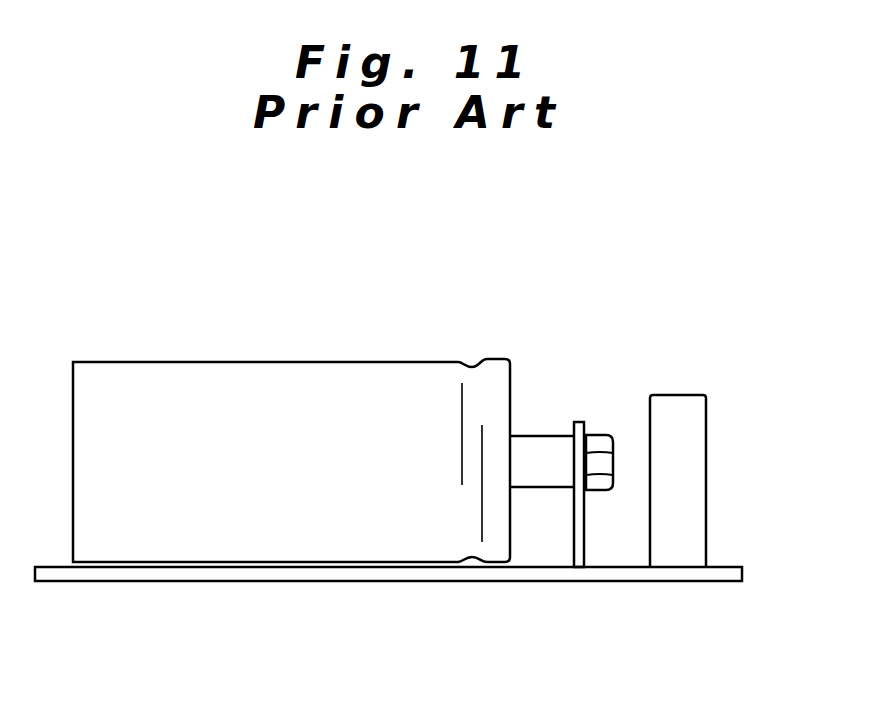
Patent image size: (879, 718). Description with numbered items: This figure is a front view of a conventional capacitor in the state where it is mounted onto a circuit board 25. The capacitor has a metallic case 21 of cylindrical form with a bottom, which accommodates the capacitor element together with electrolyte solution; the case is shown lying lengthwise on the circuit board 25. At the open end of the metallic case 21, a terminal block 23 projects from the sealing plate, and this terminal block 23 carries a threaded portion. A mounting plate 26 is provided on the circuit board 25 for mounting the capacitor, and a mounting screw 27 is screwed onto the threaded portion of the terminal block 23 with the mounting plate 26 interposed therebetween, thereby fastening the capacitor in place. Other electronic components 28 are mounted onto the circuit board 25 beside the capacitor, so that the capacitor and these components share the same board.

The metallic case 21 is at (272, 361).
The terminal block 23 is at (538, 435).
The circuit board 25 is at (682, 577).
The mounting plate 26 is at (587, 547).
The mounting screw 27 is at (600, 432).
The other electronic components 28 is at (698, 432).